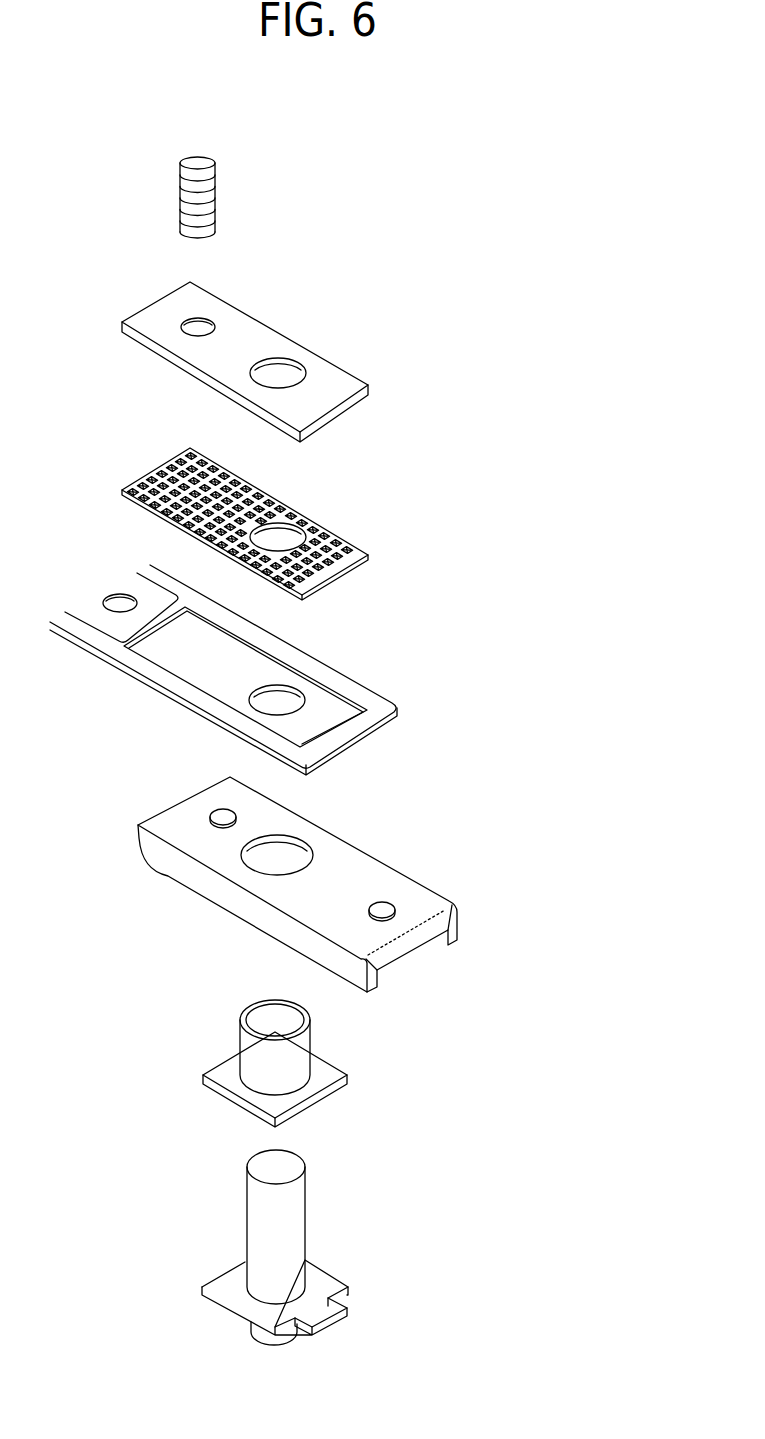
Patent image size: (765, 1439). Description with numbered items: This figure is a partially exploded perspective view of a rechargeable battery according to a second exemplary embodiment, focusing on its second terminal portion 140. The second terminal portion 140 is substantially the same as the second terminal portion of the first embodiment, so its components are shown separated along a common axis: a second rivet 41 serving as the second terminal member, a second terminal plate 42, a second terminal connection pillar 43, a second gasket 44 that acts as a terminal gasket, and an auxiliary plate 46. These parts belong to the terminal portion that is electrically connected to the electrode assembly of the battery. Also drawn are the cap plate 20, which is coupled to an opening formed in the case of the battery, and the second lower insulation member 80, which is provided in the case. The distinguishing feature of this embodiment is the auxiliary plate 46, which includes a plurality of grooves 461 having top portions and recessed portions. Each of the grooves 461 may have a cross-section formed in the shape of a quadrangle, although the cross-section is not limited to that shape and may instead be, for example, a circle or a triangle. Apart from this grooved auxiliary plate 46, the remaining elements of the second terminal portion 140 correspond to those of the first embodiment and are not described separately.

The second terminal portion 140 is at (553, 458).
The second rivet 41 is at (305, 1220).
The second terminal plate 42 is at (348, 367).
The second terminal connection pillar 43 is at (215, 196).
The second gasket 44 is at (343, 1067).
The auxiliary plate 46 is at (283, 524).
The grooves 461 is at (348, 542).
The cap plate 20 is at (379, 675).
The second lower insulation member 80 is at (445, 882).